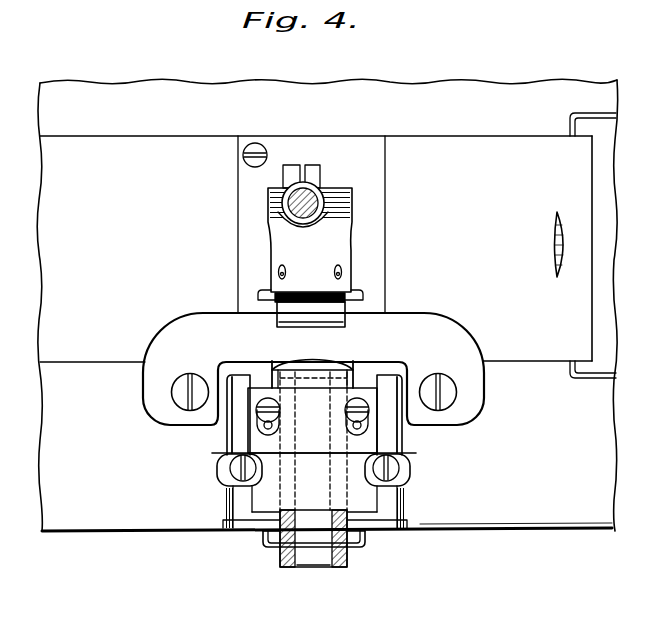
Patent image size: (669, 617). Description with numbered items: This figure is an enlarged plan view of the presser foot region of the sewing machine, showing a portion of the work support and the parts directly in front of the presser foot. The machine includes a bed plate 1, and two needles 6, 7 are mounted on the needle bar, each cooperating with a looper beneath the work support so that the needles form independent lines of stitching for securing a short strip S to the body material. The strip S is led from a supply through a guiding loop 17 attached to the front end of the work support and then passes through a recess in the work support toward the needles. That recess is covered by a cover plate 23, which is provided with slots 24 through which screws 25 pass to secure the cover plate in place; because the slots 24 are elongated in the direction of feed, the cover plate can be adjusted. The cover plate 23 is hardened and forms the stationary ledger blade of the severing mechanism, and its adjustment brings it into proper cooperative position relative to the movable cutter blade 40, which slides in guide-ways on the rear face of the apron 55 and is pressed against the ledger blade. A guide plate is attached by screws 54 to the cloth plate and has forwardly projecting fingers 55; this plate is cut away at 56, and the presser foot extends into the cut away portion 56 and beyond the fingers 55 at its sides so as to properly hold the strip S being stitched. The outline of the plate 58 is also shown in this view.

The bed plate 1 is at (475, 507).
The needle 6 is at (278, 272).
The needle 7 is at (342, 272).
The guiding loop 17 is at (350, 544).
The cover plate 23 is at (268, 498).
The slot 24 is at (259, 431).
The screw 25 is at (258, 418).
The movable cutter blade 40 is at (354, 377).
The screw 54 is at (182, 392).
The finger 55 is at (266, 301).
The cut away portion 56 is at (312, 320).
The plate 58 is at (453, 343).
The strip S is at (319, 553).